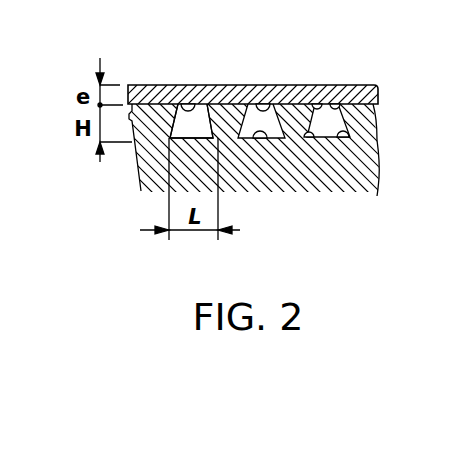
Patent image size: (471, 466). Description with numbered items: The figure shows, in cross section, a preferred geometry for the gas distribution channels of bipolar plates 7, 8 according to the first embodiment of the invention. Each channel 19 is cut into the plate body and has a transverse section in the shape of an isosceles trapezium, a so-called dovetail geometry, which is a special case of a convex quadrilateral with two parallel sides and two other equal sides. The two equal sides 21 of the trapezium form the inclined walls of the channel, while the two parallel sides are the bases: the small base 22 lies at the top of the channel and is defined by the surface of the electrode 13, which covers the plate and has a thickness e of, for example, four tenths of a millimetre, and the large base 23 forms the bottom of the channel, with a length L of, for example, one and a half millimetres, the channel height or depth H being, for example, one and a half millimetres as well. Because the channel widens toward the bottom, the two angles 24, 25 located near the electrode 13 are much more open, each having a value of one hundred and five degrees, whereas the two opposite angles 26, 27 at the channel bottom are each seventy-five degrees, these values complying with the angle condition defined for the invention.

The support body 7 is at (247, 180).
The support body 8 is at (155, 160).
The electrode 13 is at (140, 85).
The channel 19 is at (193, 129).
The side 21 is at (256, 104).
The small base 22 is at (180, 88).
The large base 23 is at (266, 140).
The angle near the electrode 24 is at (318, 100).
The angle near the electrode 25 is at (335, 85).
The opposite angle 26 is at (310, 138).
The opposite angle 27 is at (343, 138).